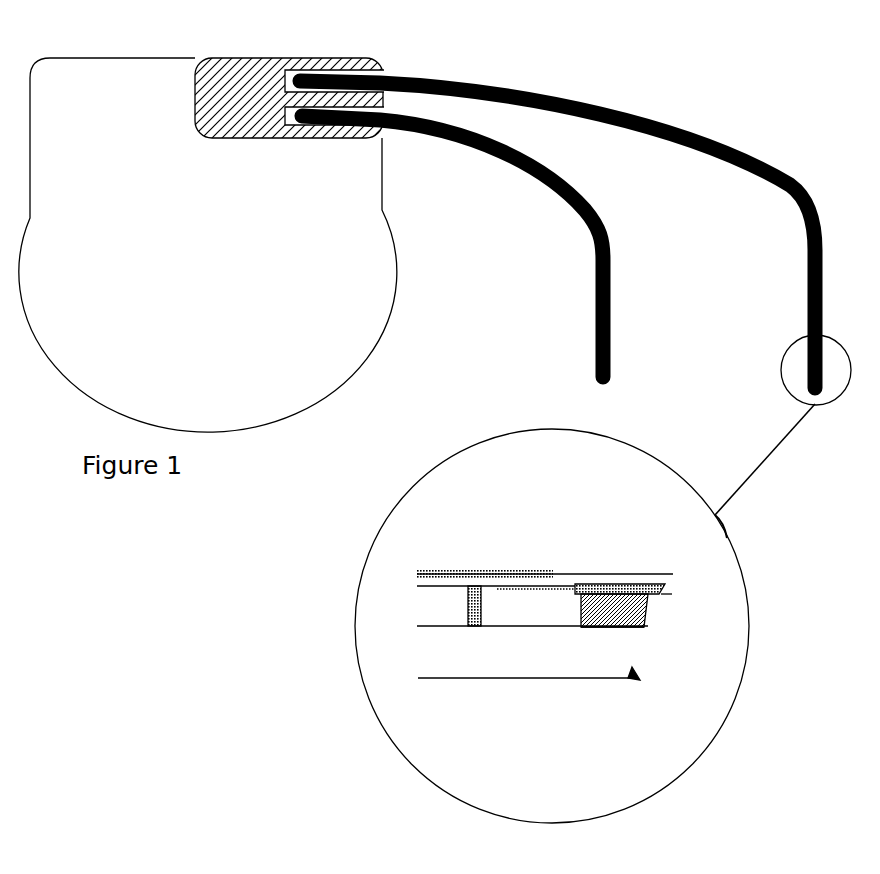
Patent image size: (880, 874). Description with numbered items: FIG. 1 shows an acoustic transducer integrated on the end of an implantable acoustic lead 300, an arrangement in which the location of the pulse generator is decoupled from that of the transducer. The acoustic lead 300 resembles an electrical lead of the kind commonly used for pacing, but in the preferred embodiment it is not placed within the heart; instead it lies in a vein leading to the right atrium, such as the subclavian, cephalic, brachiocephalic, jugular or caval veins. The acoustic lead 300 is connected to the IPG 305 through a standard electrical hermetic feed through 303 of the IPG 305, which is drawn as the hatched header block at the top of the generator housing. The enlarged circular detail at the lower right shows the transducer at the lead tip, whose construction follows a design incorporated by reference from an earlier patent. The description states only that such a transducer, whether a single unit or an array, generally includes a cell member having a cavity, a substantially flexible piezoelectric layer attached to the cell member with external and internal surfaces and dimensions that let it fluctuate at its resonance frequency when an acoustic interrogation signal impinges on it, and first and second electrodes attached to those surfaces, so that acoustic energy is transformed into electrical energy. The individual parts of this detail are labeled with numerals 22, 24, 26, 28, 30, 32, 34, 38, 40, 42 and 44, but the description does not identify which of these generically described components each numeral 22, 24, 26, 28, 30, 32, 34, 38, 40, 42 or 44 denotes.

The acoustic lead 300 is at (790, 180).
The electrical hermetic feed through 303 is at (380, 68).
The IPG 305 is at (283, 287).
The substrate 22 is at (525, 626).
The diaphragm layer 24 is at (557, 594).
The top electrode layer 26 is at (565, 573).
The metallization layer 28 is at (518, 572).
The cavity 30 is at (507, 594).
The conductive post 32 is at (652, 603).
The direction arrow 34 is at (635, 675).
The support wall 38 is at (468, 612).
The bonding layer 40 is at (627, 627).
The insulating coating 42 is at (622, 585).
The seal 44 is at (661, 594).